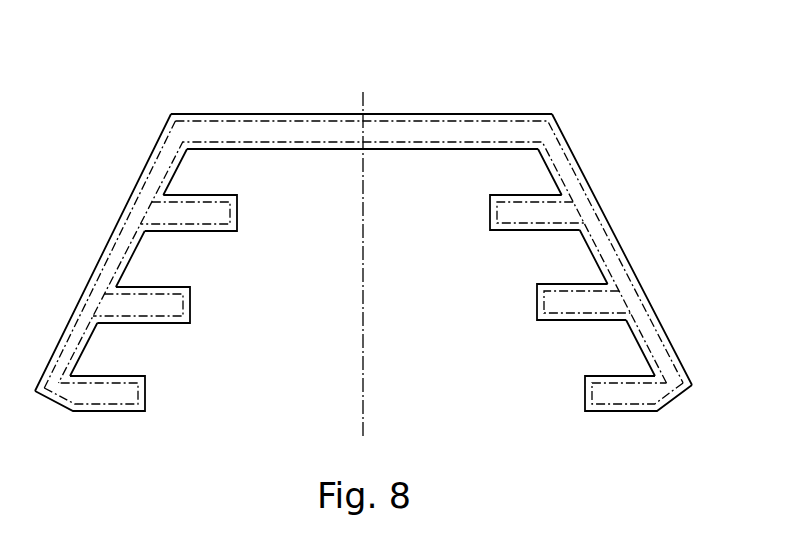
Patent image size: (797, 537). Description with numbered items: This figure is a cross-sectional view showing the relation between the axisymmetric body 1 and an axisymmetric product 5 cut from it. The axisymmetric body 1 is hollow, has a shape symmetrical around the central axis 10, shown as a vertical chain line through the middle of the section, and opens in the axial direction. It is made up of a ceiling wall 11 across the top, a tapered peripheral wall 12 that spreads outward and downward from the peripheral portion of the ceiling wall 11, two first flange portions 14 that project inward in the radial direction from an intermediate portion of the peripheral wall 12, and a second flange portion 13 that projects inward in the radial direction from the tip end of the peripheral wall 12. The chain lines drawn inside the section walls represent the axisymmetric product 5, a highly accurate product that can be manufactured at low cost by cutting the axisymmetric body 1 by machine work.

The axisymmetric body 1 is at (670, 158).
The axisymmetric product 5 is at (627, 277).
The central axis 10 is at (364, 412).
The ceiling wall 11 is at (422, 132).
The tapered peripheral wall 12 is at (572, 185).
The second flange portion 13 is at (583, 393).
The first flange portion 14 is at (535, 302).